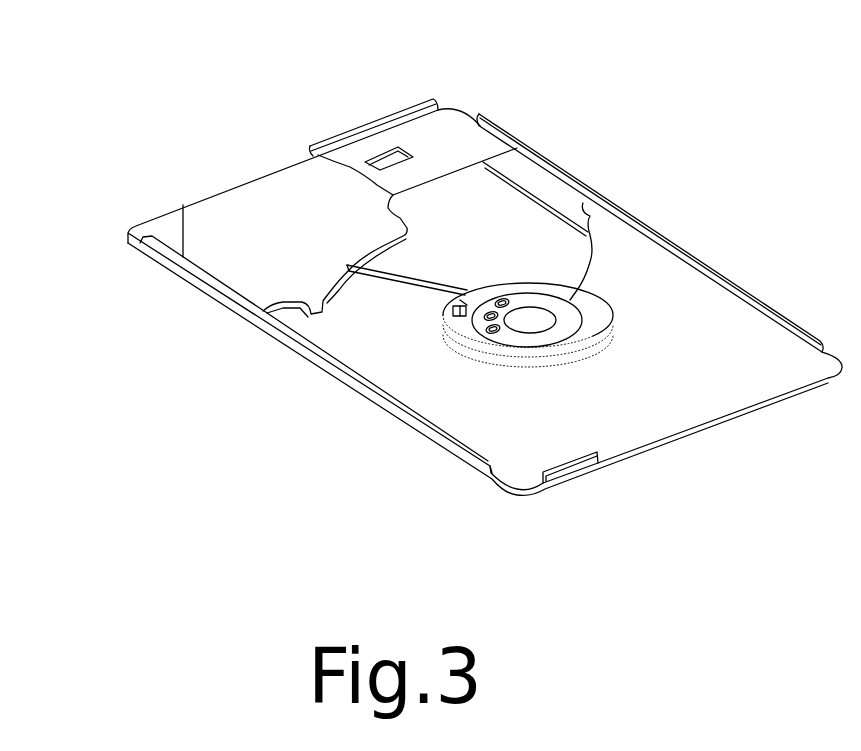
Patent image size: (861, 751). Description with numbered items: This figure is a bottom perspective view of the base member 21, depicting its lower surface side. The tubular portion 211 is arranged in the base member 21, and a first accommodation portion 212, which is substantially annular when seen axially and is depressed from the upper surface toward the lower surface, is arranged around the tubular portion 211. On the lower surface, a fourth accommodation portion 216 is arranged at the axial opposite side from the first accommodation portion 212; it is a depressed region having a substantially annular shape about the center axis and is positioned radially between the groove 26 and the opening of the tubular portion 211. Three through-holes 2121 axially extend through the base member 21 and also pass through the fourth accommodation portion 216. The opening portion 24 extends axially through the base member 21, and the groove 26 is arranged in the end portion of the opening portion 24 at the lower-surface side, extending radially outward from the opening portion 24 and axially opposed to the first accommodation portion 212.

The base member 21 is at (138, 140).
The opening portion 24 is at (465, 300).
The groove 26 is at (462, 296).
The tubular portion 211 is at (538, 310).
The first accommodation portion 212 is at (508, 286).
The fourth accommodation portion 216 is at (565, 317).
The through-holes 2121 is at (443, 318).